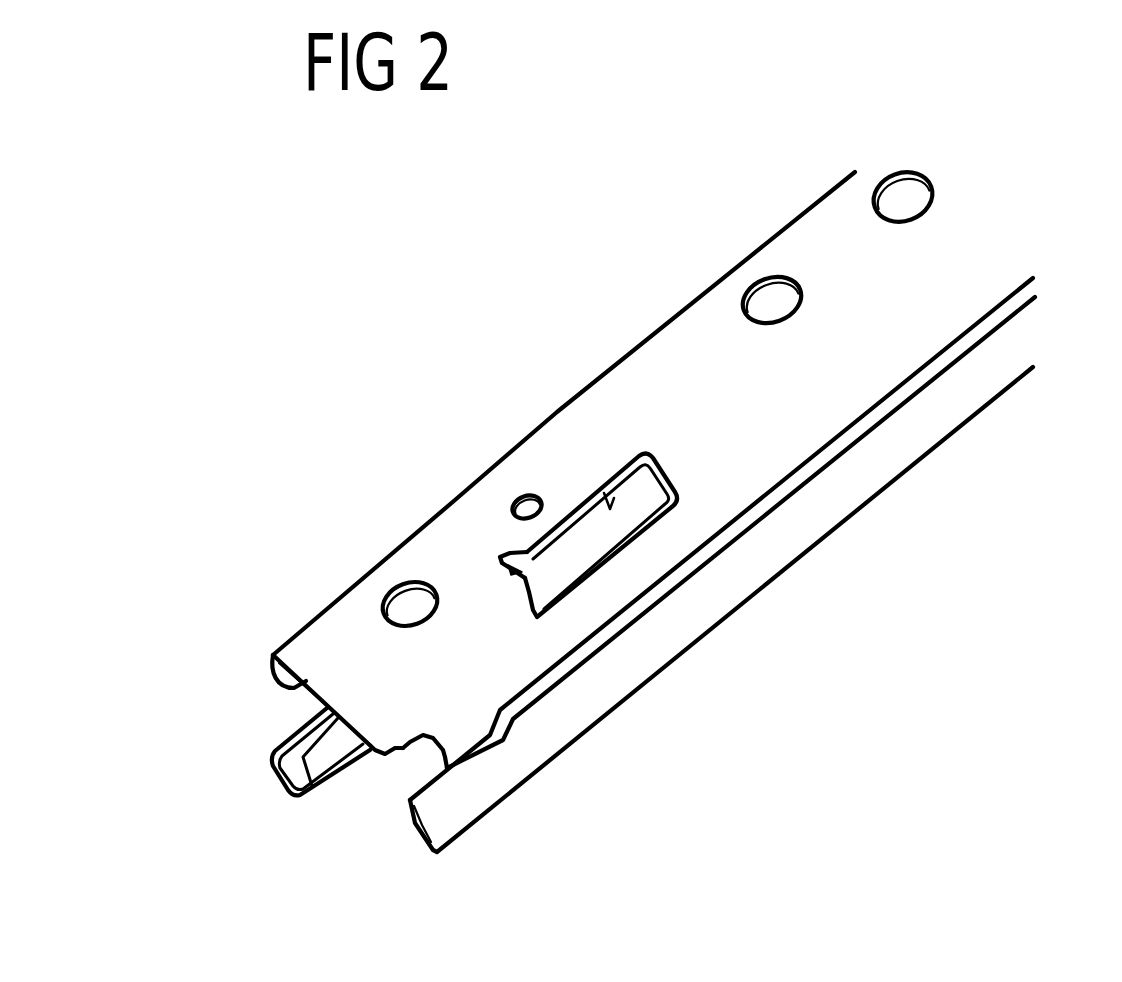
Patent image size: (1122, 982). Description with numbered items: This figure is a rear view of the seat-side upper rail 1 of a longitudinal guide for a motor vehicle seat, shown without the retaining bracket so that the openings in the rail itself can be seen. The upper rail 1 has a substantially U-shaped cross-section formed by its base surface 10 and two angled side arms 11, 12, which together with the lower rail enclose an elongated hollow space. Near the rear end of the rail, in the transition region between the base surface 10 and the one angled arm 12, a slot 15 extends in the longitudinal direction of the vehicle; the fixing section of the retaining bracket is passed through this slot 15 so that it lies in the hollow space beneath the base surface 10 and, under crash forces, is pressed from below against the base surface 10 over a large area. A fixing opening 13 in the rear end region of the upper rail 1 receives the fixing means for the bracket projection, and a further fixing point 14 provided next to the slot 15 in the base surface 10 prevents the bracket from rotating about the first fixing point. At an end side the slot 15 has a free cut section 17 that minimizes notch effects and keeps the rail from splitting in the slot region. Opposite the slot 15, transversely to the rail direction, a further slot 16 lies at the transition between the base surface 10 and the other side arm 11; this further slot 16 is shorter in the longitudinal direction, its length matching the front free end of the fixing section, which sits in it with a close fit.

The upper rail 1 is at (400, 756).
The base surface 10 is at (705, 323).
The side arm 11 is at (272, 665).
The side arm 12 is at (333, 800).
The fixing opening 13 is at (405, 596).
The further fixing point 14 is at (524, 493).
The slot 15 is at (602, 535).
The further slot 16 is at (607, 498).
The free cut section 17 is at (507, 558).